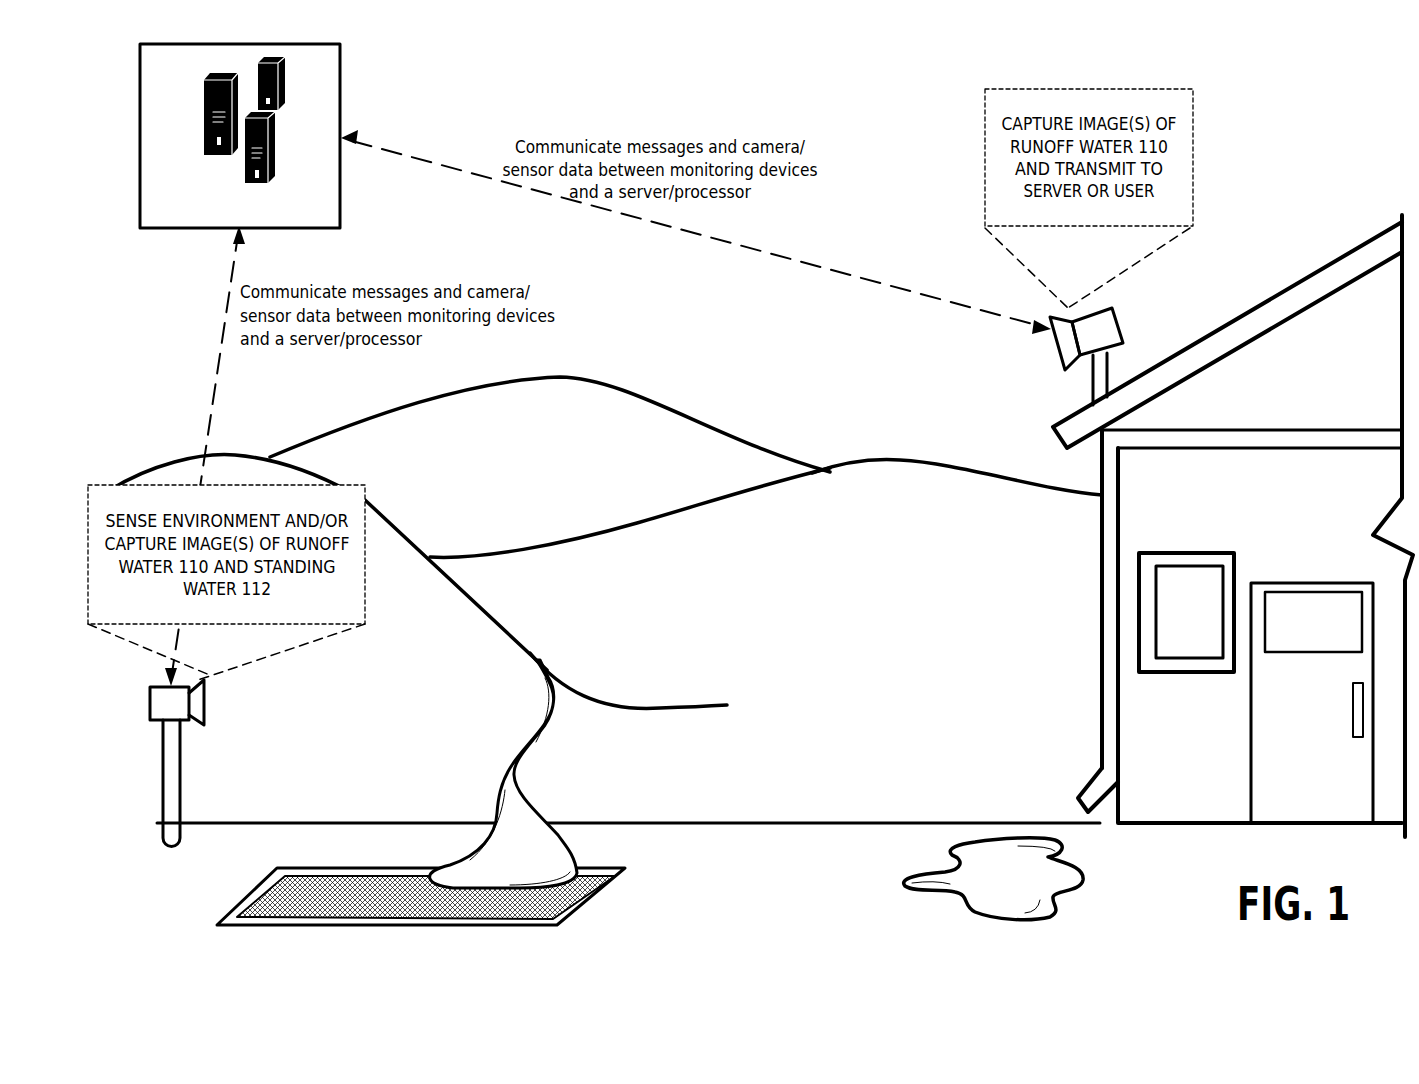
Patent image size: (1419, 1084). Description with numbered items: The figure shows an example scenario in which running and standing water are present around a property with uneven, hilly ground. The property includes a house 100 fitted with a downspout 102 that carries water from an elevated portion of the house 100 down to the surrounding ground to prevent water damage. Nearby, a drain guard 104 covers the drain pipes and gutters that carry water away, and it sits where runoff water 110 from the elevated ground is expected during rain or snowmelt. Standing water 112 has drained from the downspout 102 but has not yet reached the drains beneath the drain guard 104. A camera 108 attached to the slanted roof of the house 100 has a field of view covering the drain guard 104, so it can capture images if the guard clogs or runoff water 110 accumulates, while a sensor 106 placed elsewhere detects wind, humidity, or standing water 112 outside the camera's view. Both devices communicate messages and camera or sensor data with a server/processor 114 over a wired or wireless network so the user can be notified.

The house 100 is at (1328, 270).
The downspout 102 is at (1105, 682).
The drain guard 104 is at (437, 918).
The sensor 106 is at (173, 744).
The camera 108 is at (1124, 330).
The runoff water 110 is at (553, 867).
The standing water 112 is at (950, 885).
The server/processor 114 is at (342, 87).